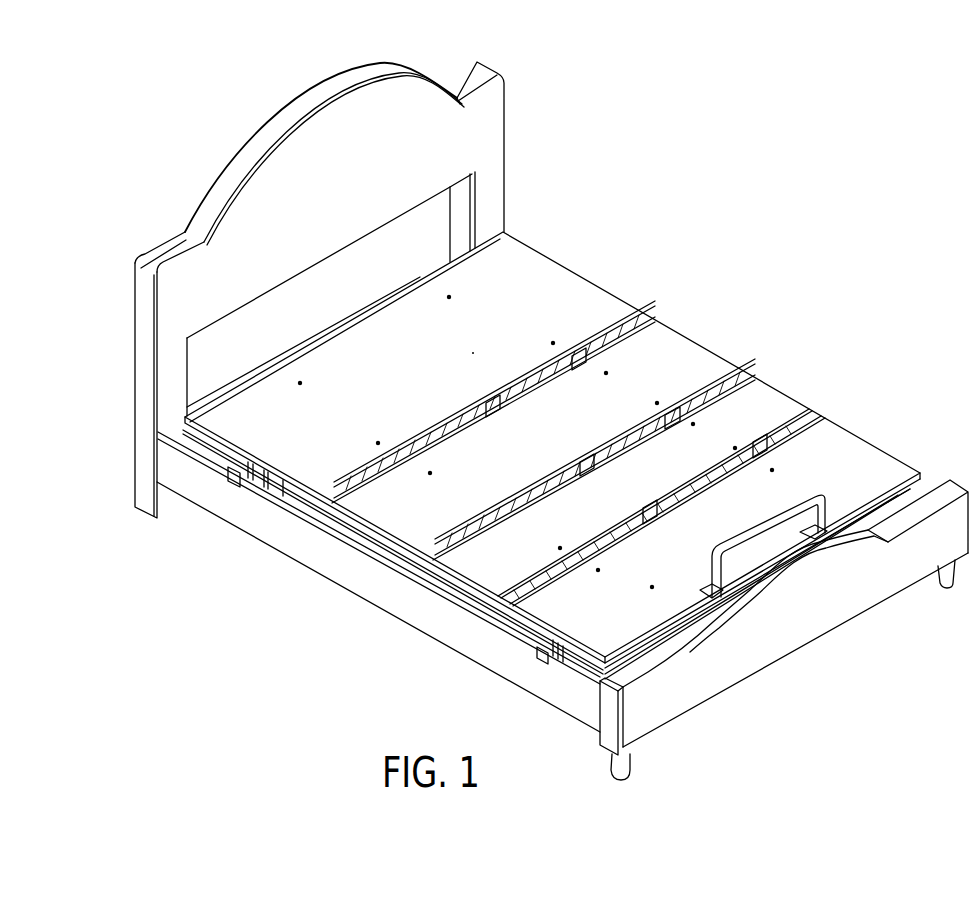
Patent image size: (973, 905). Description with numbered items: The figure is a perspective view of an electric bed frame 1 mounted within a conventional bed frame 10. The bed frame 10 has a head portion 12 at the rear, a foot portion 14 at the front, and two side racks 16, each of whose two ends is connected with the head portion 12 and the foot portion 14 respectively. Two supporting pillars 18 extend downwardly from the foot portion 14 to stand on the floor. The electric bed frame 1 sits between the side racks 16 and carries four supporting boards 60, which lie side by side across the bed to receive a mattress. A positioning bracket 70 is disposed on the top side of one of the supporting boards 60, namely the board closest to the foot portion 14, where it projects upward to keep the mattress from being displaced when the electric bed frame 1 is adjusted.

The electric bed frame 1 is at (582, 266).
The bed frame 10 is at (240, 130).
The head portion 12 is at (428, 133).
The foot portion 14 is at (858, 588).
The side racks 16 is at (328, 553).
The supporting pillars 18 is at (632, 763).
The supporting boards 60 is at (853, 460).
The positioning bracket 70 is at (750, 530).